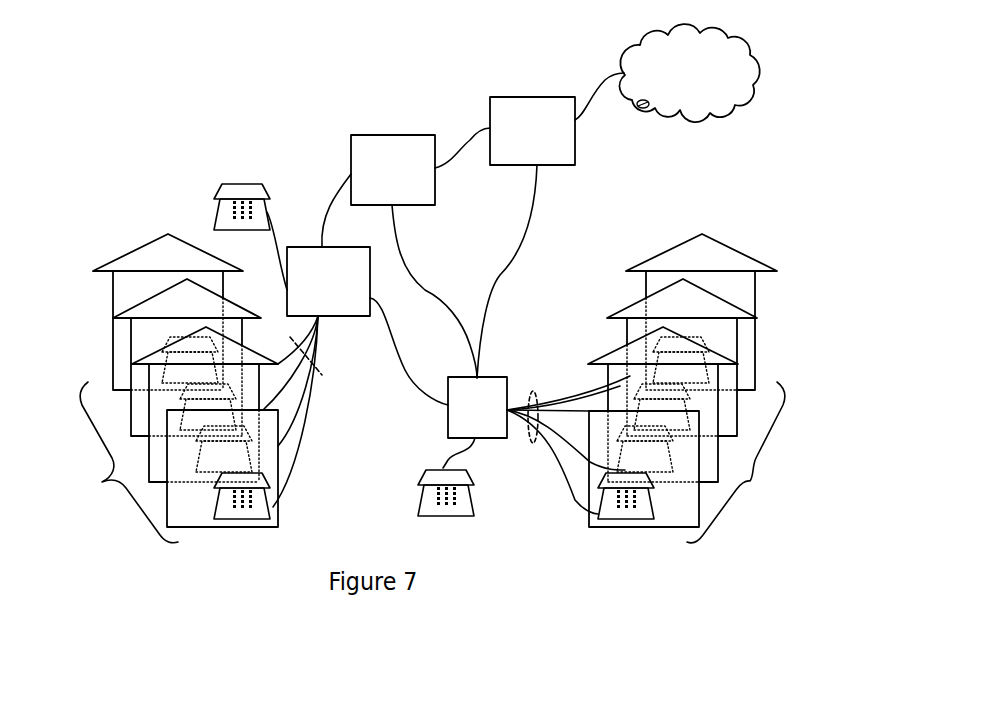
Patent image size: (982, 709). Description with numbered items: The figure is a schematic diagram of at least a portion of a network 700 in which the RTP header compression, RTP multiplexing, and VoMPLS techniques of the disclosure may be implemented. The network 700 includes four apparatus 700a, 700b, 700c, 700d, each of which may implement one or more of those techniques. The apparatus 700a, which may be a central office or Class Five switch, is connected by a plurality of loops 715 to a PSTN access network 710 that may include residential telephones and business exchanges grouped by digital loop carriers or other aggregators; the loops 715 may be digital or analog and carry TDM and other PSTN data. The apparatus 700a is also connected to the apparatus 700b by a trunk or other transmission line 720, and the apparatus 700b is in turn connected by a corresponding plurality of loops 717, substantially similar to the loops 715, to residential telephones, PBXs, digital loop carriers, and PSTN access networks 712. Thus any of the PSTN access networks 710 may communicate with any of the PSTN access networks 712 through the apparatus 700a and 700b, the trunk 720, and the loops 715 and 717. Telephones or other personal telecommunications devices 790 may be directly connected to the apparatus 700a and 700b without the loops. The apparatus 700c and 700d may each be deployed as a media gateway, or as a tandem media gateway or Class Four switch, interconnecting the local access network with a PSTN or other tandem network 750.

The network 700 is at (261, 71).
The apparatus 700a is at (477, 407).
The apparatus 700b is at (328, 281).
The apparatus 700c is at (532, 131).
The apparatus 700d is at (393, 170).
The tandem network 750 is at (690, 73).
The telephone or other personal telecommunications device 790 is at (217, 213).
The PSTN access networks 712 is at (163, 388).
The PSTN access network 710 is at (699, 388).
The loops 715 is at (533, 392).
The loops 717 is at (328, 378).
The trunk or other transmission line 720 is at (413, 390).